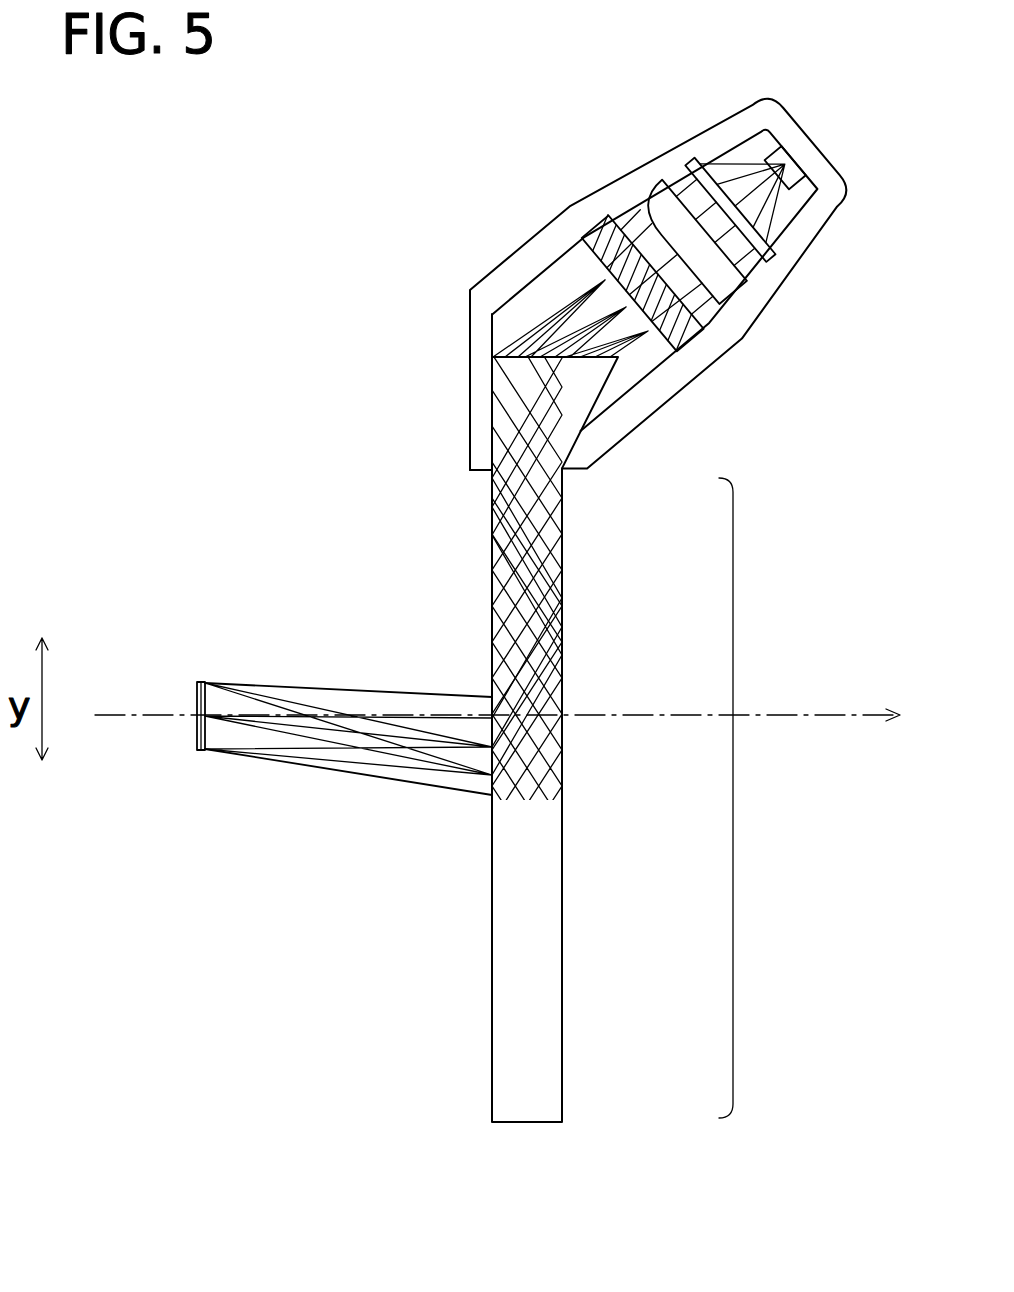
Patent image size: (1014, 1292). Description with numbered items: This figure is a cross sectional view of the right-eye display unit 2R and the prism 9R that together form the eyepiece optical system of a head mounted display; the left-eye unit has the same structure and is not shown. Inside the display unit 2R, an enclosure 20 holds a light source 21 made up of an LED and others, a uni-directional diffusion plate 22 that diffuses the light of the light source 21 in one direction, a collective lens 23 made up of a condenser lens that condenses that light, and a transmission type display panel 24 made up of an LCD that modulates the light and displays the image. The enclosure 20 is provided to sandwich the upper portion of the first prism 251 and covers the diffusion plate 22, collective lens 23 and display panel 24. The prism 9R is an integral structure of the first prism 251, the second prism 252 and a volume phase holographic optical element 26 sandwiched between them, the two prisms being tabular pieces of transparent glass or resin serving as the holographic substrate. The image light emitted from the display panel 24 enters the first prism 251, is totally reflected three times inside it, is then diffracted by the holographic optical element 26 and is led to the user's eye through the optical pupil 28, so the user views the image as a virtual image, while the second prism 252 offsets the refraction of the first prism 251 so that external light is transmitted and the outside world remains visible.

The display unit 2R is at (686, 136).
The enclosure 20 is at (808, 150).
The light source 21 is at (792, 183).
The uni-directional diffusion plate 22 is at (774, 241).
The collective lens 23 is at (740, 292).
The transmission type display panel 24 is at (692, 338).
The first prism 251 is at (563, 649).
The second prism 252 is at (532, 1001).
The volume phase holographic optical element 26 is at (540, 778).
The optical pupil 28 is at (200, 692).
The prism 9R is at (734, 796).